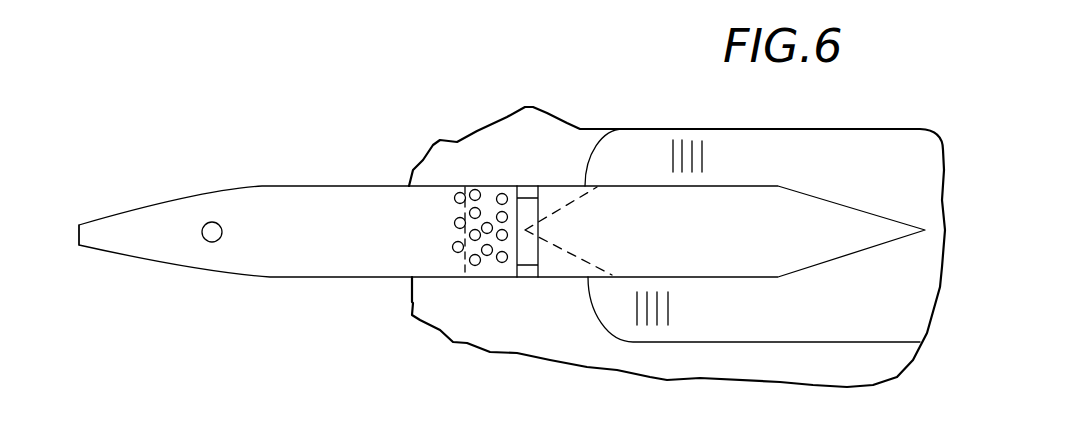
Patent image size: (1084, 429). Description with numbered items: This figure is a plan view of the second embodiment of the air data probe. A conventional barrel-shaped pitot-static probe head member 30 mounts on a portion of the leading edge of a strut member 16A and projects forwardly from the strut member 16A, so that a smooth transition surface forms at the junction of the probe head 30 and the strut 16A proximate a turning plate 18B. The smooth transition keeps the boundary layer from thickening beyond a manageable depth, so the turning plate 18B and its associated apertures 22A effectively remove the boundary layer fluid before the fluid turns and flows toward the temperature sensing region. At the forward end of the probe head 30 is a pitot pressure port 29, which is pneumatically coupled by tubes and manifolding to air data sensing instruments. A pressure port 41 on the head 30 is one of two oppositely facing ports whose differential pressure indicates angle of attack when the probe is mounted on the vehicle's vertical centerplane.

The strut member 16A is at (826, 228).
The pitot-static probe head member 30 is at (252, 193).
The pitot pressure port 29 is at (78, 236).
The pressure port 41 is at (218, 242).
The apertures 22A is at (500, 193).
The turning plate 18B is at (522, 192).